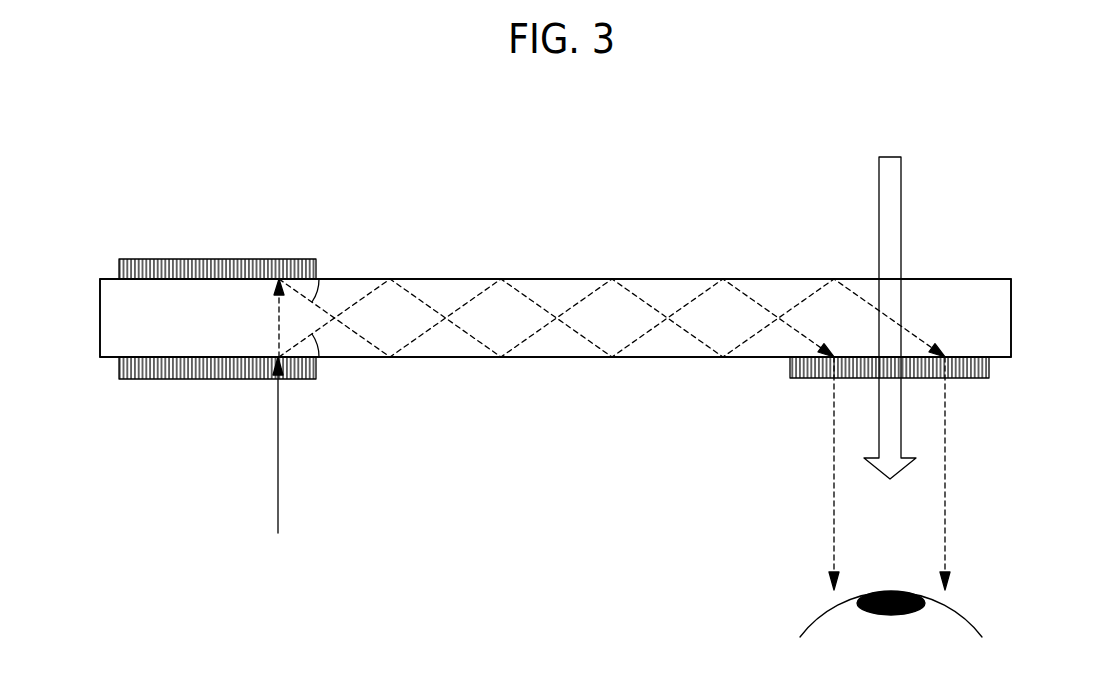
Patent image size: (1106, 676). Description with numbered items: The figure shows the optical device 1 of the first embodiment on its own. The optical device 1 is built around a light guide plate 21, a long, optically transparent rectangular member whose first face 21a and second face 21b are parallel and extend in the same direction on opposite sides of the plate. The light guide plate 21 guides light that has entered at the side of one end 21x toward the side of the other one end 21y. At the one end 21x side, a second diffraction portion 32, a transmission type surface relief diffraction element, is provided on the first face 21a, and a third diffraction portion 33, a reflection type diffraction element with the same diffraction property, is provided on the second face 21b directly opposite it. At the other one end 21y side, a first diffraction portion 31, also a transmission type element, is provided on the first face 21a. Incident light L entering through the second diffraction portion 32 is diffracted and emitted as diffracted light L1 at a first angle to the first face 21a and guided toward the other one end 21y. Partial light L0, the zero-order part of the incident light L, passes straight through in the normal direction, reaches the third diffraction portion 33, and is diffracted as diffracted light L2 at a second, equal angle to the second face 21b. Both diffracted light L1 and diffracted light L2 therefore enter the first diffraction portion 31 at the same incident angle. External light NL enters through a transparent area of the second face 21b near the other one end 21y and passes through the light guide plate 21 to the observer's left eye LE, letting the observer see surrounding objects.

The optical device 1 is at (635, 236).
The light guide plate 21 is at (110, 328).
The one end 21x is at (99, 297).
The other one end 21y is at (1013, 317).
The first face 21a is at (475, 357).
The second face 21b is at (475, 279).
The first diffraction portion 31 is at (1003, 369).
The second diffraction portion 32 is at (152, 379).
The third diffraction portion 33 is at (152, 259).
The incident light L is at (278, 450).
The partial light L0 is at (278, 314).
The diffracted light L1 is at (416, 290).
The diffracted light L2 is at (415, 350).
The external light NL is at (903, 186).
The left eye LE is at (815, 618).